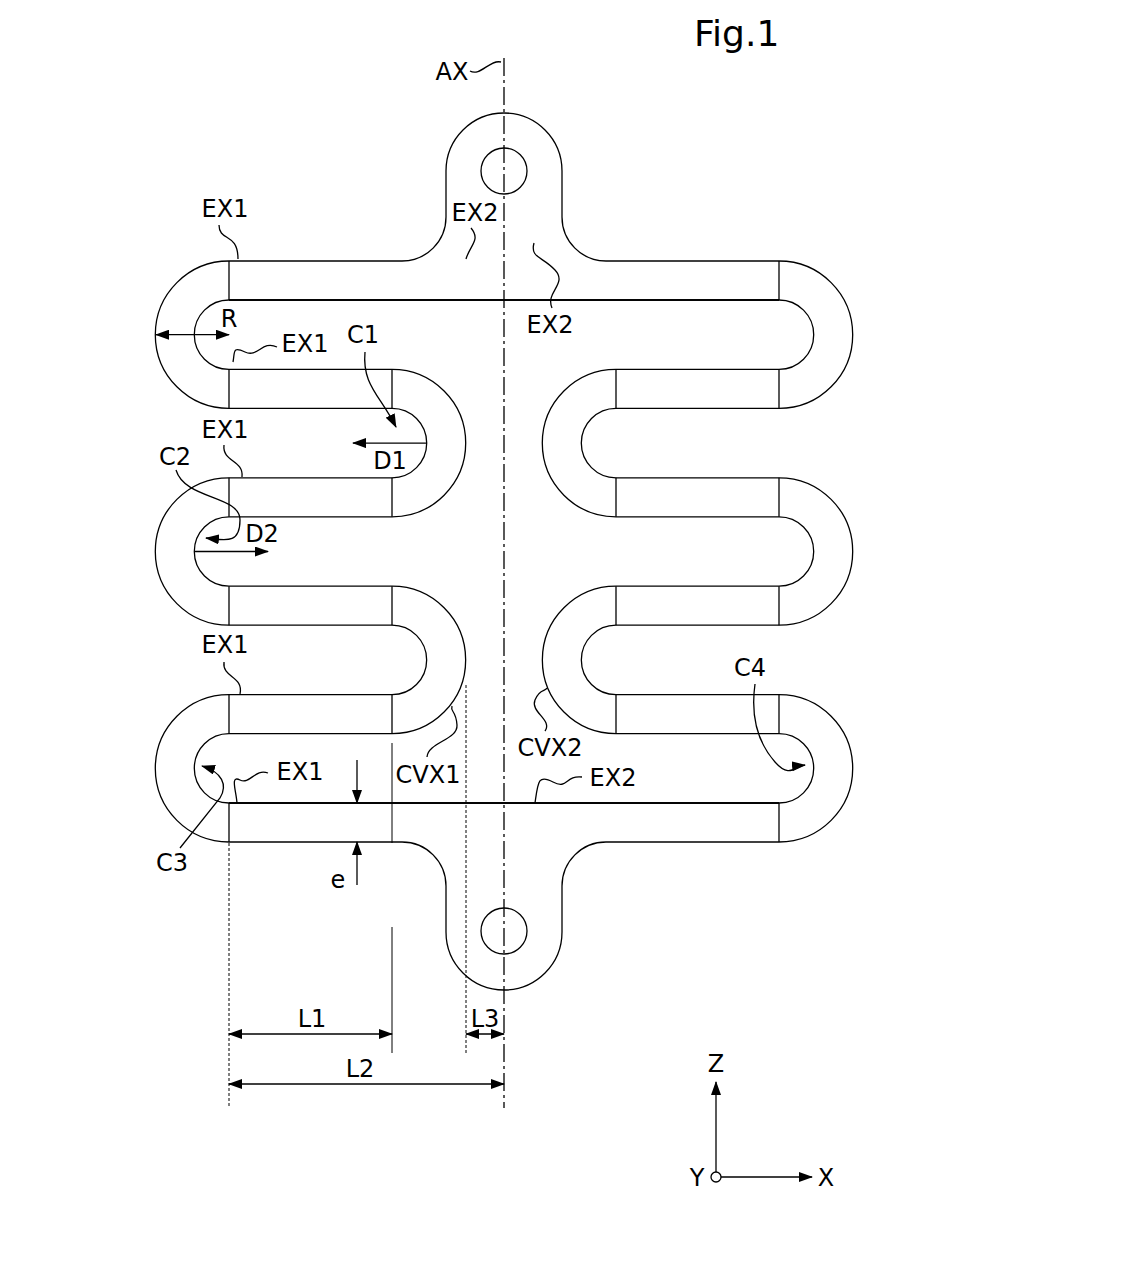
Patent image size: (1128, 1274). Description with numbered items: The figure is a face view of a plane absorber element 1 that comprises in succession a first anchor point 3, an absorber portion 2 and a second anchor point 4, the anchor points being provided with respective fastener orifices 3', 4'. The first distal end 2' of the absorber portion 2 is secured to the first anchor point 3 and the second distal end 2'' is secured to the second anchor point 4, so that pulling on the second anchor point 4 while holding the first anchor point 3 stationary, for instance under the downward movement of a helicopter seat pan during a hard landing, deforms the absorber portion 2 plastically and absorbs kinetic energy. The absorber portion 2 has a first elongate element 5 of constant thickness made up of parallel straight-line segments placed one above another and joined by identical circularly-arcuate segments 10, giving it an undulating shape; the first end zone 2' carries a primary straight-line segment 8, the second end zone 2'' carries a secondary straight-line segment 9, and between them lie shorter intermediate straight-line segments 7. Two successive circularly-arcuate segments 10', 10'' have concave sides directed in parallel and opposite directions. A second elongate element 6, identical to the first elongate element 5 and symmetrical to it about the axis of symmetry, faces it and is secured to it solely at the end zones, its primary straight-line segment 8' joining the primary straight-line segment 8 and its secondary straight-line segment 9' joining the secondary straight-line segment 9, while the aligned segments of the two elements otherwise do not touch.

The absorber element 1 is at (218, 164).
The absorber portion 2 is at (435, 551).
The first distal end 2' is at (504, 220).
The second distal end 2'' is at (504, 881).
The first anchor point 3 is at (506, 187).
The fastener orifice 3' is at (520, 138).
The second anchor point 4 is at (511, 917).
The fastener orifice 4' is at (517, 965).
The first elongate element 5 is at (195, 890).
The second elongate element 6 is at (746, 862).
The intermediate straight-line segments 7 is at (347, 409).
The primary straight-line segment 8 is at (315, 227).
The primary straight-line segment 8' is at (692, 227).
The secondary straight-line segment 9 is at (322, 879).
The secondary straight-line segment 9' is at (692, 876).
The circularly-arcuate segments 10 is at (487, 551).
The circularly-arcuate segment 10' is at (436, 421).
The circularly-arcuate segment 10'' is at (185, 565).